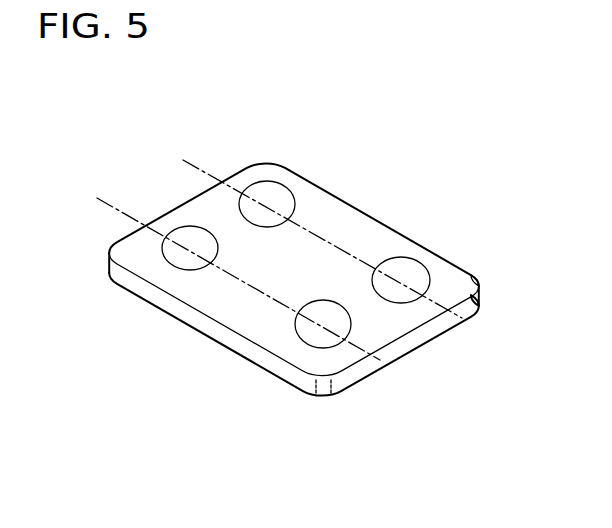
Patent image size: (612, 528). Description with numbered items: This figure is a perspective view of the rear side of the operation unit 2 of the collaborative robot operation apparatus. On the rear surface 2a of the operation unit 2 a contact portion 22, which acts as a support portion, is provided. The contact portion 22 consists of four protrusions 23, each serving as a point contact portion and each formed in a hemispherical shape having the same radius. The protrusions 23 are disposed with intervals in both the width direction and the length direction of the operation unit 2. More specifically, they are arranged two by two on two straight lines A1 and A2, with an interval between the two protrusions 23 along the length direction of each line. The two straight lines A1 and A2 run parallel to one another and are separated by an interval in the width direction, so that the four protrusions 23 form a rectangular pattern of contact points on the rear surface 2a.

The operation unit 2 is at (291, 228).
The rear surface 2a is at (230, 302).
The contact portion 22 is at (300, 175).
The protrusions 23 is at (267, 183).
The straight line A1 is at (352, 345).
The straight line A2 is at (430, 307).